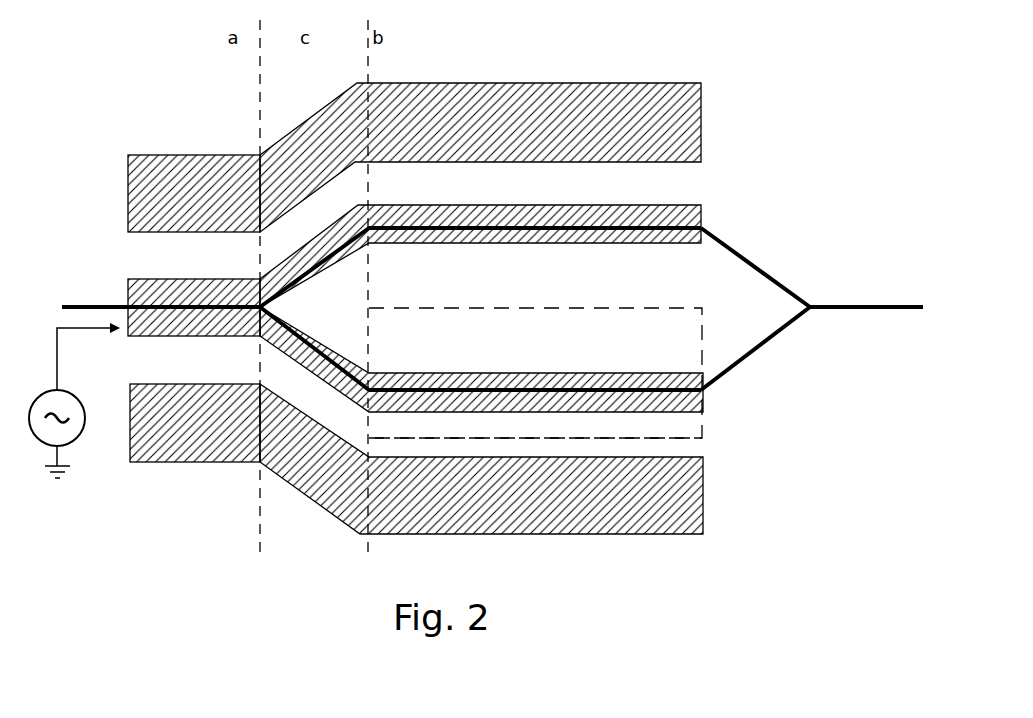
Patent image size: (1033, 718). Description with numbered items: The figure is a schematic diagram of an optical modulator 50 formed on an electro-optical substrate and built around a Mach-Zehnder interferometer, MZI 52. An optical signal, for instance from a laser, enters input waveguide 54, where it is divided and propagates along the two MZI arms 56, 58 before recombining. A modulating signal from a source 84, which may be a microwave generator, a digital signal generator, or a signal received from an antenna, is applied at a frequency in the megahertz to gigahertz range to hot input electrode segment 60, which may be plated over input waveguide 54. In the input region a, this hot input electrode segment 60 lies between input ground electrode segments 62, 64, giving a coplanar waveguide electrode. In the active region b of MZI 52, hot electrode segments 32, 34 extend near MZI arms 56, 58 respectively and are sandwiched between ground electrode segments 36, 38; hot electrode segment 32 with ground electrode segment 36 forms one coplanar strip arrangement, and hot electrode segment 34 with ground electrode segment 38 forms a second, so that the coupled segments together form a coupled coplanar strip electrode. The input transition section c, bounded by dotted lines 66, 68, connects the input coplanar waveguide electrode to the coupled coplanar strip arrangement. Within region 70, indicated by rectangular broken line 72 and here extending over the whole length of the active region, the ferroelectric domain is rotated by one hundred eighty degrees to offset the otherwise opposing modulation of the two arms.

The optical modulator 50 is at (720, 66).
The MZI 52 is at (660, 215).
The input waveguide 54 is at (190, 312).
The MZI arm 56 is at (551, 226).
The MZI arm 58 is at (625, 388).
The input electrode segment 60 is at (128, 293).
The input ground electrode segment 62 is at (142, 155).
The input ground electrode segment 64 is at (198, 462).
The dotted line 66 is at (259, 90).
The dotted line 68 is at (368, 64).
The hot electrode segment 32 is at (600, 212).
The hot electrode segment 34 is at (584, 404).
The ground electrode segment 36 is at (528, 83).
The ground electrode segment 38 is at (633, 534).
The region 70 is at (594, 328).
The rectangular broken line 72 is at (712, 421).
The source 84 is at (44, 391).